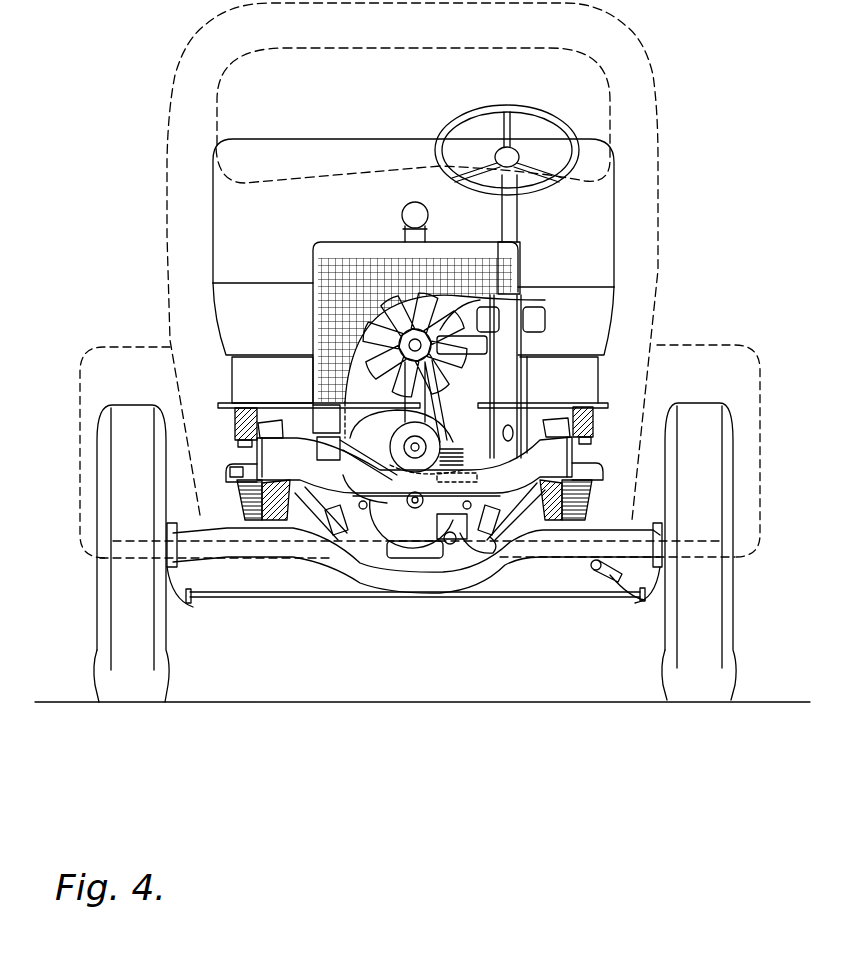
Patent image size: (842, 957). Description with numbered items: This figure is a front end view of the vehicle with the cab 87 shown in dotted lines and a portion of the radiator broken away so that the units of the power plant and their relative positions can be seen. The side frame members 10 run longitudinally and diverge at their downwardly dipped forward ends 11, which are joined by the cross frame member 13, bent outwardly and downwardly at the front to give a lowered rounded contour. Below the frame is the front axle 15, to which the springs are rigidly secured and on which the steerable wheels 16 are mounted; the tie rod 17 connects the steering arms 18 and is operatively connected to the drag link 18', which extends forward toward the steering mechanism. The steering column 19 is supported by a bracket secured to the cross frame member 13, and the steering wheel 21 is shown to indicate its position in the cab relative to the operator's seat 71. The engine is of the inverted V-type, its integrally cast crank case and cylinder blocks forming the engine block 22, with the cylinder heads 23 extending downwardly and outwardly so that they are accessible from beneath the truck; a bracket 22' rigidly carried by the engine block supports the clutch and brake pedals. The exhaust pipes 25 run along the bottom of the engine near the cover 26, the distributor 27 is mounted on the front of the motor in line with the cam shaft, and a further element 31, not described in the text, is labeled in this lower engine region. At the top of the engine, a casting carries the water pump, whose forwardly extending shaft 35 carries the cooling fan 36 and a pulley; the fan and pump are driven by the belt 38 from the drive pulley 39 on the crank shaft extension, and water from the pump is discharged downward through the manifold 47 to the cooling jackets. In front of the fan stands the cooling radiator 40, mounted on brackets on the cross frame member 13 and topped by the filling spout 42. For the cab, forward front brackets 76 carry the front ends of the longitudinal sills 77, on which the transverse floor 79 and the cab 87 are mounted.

The side frame members 10 is at (557, 423).
The forward ends of the side frame members 11 is at (313, 440).
The cross frame member 13 is at (330, 505).
The axle 15 is at (547, 548).
The steerable wheels 16 is at (160, 660).
The tie rod 17 is at (515, 600).
The steering arms 18 is at (413, 603).
The drag link 18' is at (595, 595).
The steering column 19 is at (518, 215).
The steering wheel 21 is at (548, 115).
The engine block 22 is at (399, 512).
The bracket 22' is at (601, 461).
The cylinder heads 23 is at (527, 547).
The exhaust pipes 25 is at (457, 550).
The cover 26 is at (410, 548).
The distributor 27 is at (413, 502).
The link 31 is at (387, 503).
The shaft 35 is at (478, 315).
The cooling fan 36 is at (478, 340).
The belt 38 is at (440, 405).
The drive pulley 39 is at (400, 453).
The cooling radiator 40 is at (312, 318).
The filling spout 42 is at (402, 221).
The manifold 47 is at (457, 385).
The operator's seat 71 is at (612, 298).
The forward front brackets 76 is at (240, 447).
The sills 77 is at (242, 420).
The floor 79 is at (245, 400).
The cab 87 is at (662, 178).